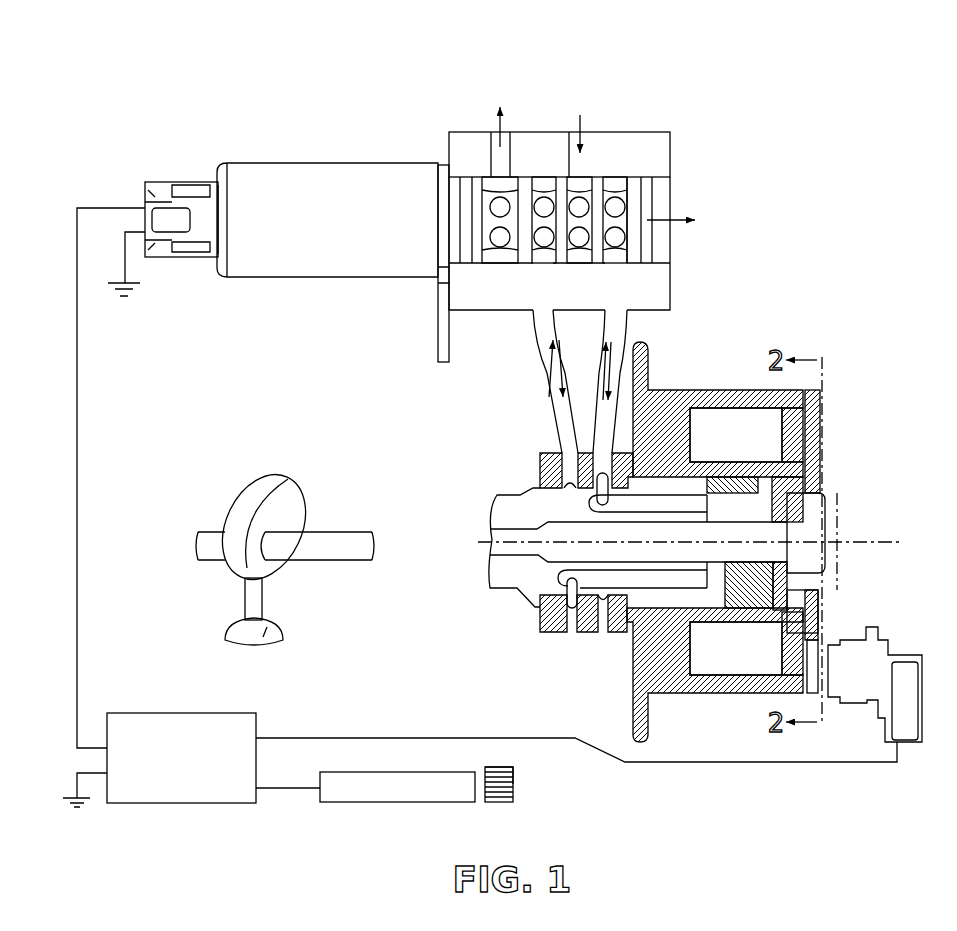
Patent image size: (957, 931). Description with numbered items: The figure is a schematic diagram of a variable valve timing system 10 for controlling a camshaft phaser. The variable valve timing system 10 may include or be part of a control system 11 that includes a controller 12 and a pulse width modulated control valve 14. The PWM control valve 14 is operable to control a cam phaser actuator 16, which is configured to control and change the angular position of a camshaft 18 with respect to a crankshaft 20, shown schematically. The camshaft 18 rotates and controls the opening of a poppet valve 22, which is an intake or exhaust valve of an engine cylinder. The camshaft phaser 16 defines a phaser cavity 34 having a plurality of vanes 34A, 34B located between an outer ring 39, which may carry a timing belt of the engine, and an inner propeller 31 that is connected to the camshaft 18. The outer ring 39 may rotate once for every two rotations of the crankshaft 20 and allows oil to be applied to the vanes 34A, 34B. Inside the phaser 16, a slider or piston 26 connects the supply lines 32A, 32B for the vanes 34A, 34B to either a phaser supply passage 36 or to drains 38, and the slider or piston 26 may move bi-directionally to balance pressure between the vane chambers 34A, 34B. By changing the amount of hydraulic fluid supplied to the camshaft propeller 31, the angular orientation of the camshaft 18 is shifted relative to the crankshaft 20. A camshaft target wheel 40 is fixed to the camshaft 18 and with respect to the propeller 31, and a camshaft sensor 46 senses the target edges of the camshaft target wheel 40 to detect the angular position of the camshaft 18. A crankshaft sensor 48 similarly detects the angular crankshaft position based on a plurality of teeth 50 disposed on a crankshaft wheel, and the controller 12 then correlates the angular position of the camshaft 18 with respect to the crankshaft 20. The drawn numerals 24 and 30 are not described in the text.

The variable valve timing system 10 is at (773, 79).
The control system 11 is at (184, 443).
The controller 12 is at (169, 768).
The pulse width modulated (PWM) control valve 14 is at (319, 232).
The cam phaser actuator 16 is at (684, 144).
The camshaft 18 is at (336, 526).
The crankshaft 20 is at (514, 783).
The poppet valve 22 is at (264, 633).
The spool bore 24 is at (631, 183).
The slider or piston 26 is at (545, 183).
The phaser housing 30 is at (660, 458).
The inner propeller 31 is at (743, 456).
The supply line 32A is at (552, 398).
The supply line 32B is at (628, 317).
The phaser cavity 34 is at (688, 697).
The vane 34A is at (760, 660).
The vane 34B is at (762, 438).
The phaser supply passage 36 is at (584, 157).
The drains 38 is at (492, 149).
The outer ring 39 is at (798, 627).
The camshaft target wheel 40 is at (812, 413).
The camshaft sensor 46 is at (843, 647).
The crankshaft sensor 48 is at (387, 797).
The teeth 50 is at (498, 777).